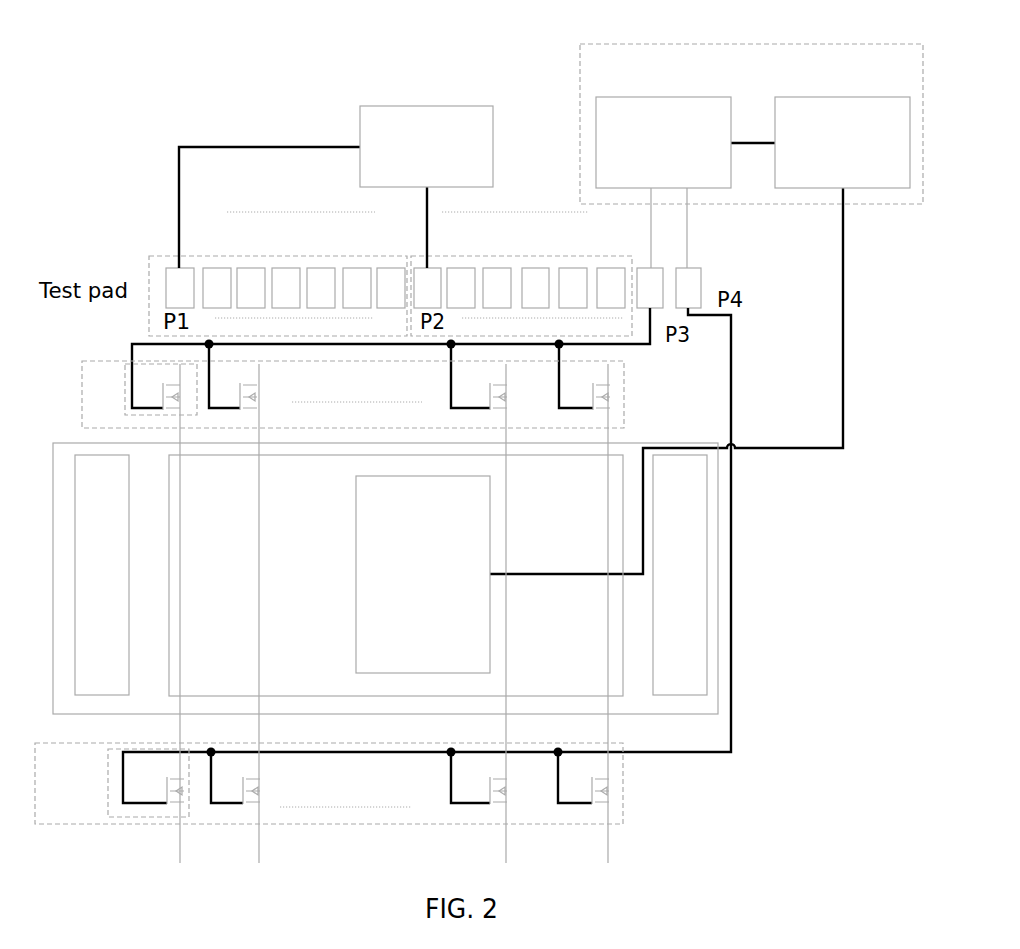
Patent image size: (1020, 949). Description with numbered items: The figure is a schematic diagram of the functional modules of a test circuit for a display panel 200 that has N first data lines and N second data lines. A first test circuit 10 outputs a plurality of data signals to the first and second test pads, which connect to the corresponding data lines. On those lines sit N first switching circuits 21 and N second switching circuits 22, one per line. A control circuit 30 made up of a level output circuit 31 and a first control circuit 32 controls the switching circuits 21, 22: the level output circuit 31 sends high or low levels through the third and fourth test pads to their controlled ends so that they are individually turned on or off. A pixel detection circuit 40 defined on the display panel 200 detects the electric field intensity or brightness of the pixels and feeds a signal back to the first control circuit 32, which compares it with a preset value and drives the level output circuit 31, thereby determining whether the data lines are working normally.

The first test circuit 10 is at (427, 106).
The control circuit 30 is at (752, 44).
The level output circuit 31 is at (663, 97).
The first control circuit 32 is at (843, 97).
The first switching circuit 21 is at (125, 387).
The second switching circuit 22 is at (108, 763).
The display panel 200 is at (53, 579).
The pixel detection circuit 40 is at (490, 618).